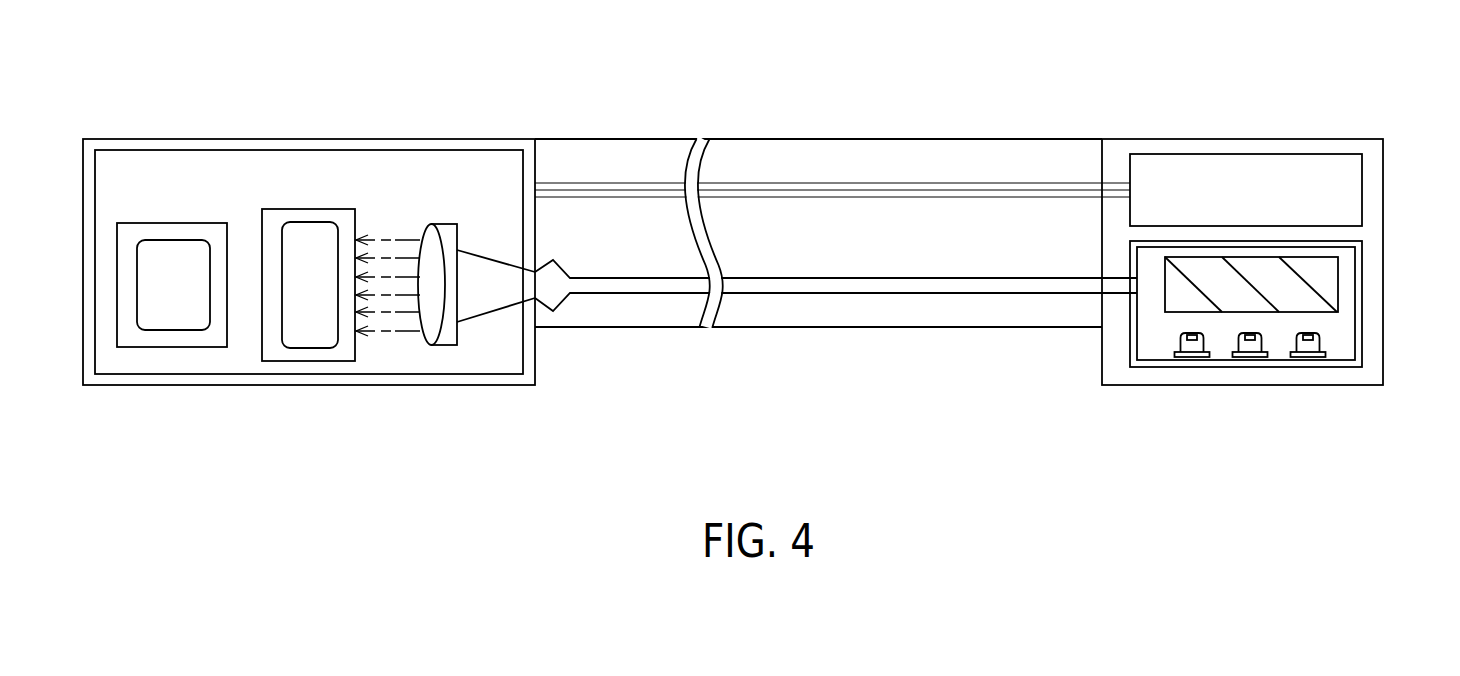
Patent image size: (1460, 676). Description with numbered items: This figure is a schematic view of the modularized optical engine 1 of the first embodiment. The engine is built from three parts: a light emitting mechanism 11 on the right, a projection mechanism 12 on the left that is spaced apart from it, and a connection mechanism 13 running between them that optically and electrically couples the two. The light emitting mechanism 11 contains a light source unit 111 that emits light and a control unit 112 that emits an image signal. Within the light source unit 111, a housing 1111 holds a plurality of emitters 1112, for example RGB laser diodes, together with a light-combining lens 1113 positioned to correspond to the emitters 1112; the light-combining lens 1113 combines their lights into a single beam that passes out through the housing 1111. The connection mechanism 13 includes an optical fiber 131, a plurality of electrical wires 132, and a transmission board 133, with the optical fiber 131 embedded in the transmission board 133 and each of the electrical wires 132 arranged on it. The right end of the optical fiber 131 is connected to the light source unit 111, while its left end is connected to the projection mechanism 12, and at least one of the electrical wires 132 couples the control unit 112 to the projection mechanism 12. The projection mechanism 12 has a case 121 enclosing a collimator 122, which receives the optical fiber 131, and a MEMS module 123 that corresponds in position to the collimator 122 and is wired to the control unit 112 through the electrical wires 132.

The modularized optical engine 1 is at (100, 91).
The light emitting mechanism 11 is at (1452, 484).
The light source unit 111 is at (1383, 444).
The housing 1111 is at (1343, 365).
The emitters 1112 is at (1250, 345).
The light-combining lens 1113 is at (1183, 295).
The control unit 112 is at (1340, 184).
The projection mechanism 12 is at (518, 456).
The case 121 is at (398, 379).
The collimator 122 is at (477, 297).
The micro-electromechanical systems (MEMS) module 123 is at (313, 359).
The connection mechanism 13 is at (1017, 396).
The optical fiber 131 is at (820, 285).
The electrical wires 132 is at (928, 192).
The transmission board 133 is at (977, 320).